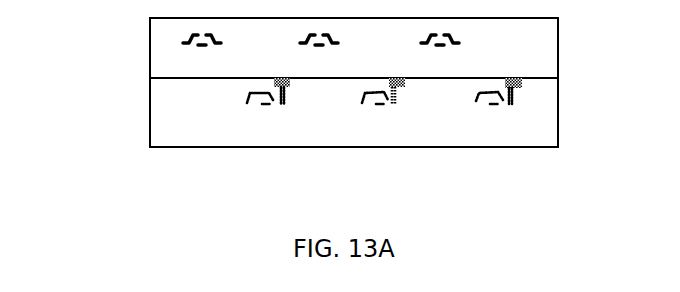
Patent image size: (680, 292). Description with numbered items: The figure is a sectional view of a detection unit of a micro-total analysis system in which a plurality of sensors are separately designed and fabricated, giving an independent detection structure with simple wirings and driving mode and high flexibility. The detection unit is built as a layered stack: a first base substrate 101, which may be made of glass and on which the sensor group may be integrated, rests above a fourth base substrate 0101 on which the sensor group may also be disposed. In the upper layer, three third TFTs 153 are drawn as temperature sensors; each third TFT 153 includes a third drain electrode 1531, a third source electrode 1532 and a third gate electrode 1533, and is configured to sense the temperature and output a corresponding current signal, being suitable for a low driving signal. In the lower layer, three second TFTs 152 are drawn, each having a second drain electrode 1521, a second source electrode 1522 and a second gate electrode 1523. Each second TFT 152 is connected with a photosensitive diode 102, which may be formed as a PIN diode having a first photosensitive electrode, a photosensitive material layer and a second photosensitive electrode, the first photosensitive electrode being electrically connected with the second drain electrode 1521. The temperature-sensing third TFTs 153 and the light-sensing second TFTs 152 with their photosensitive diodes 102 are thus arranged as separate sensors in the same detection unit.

The fourth base substrate 0101 is at (517, 127).
The first base substrate 101 is at (545, 48).
The photosensitive diode 102 is at (520, 95).
The third TFT 153 is at (70, 52).
The third drain electrode 1531 is at (216, 44).
The third source electrode 1532 is at (185, 43).
The third gate electrode 1533 is at (204, 46).
The second TFT 152 is at (478, 157).
The second drain electrode 1521 is at (394, 105).
The second source electrode 1522 is at (363, 104).
The second gate electrode 1523 is at (379, 105).